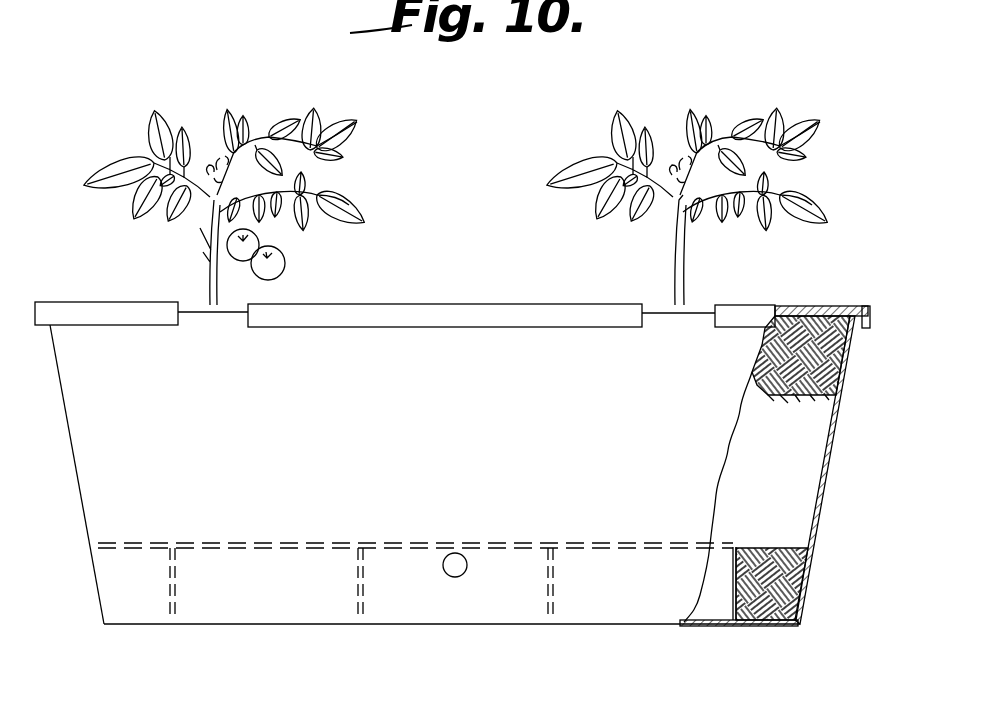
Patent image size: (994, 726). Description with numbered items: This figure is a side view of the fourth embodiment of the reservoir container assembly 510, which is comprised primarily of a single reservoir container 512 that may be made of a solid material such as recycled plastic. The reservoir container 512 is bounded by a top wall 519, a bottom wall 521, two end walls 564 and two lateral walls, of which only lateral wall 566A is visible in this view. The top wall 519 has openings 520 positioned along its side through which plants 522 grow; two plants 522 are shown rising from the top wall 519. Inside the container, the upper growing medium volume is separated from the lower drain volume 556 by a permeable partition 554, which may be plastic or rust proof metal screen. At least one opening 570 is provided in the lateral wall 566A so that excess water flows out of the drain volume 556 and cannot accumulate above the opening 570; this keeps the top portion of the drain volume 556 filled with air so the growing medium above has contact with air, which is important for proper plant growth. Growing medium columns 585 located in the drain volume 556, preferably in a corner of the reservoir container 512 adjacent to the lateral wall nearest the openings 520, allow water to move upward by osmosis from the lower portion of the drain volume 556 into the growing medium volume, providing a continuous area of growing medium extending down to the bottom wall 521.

The reservoir container assembly 510 is at (852, 74).
The reservoir container 512 is at (42, 293).
The top wall 519 is at (508, 284).
The openings 520 is at (250, 304).
The plants 522 is at (220, 277).
The end walls 564 is at (70, 432).
The lateral wall 566A is at (133, 500).
The drain volume 556 is at (220, 607).
The permeable partition 554 is at (340, 545).
The opening 570 is at (452, 580).
The bottom wall 521 is at (657, 630).
The growing medium columns 585 is at (764, 612).